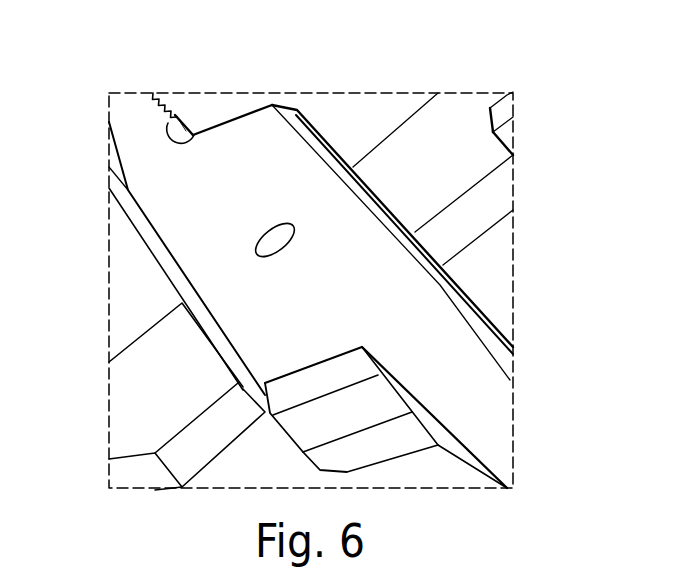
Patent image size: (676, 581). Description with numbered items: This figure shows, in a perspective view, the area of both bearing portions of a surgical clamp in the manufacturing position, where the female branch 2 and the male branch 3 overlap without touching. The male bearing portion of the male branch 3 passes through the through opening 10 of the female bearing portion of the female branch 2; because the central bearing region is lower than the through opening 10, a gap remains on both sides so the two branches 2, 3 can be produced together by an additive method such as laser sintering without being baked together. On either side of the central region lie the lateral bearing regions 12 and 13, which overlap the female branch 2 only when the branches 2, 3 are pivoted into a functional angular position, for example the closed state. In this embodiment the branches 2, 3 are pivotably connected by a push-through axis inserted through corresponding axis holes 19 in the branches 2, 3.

The female branch 2 is at (487, 384).
The male branch 3 is at (470, 94).
The through opening 10 is at (362, 406).
The lateral bearing region 12 is at (162, 363).
The lateral bearing region 13 is at (457, 150).
The axis hole 19 is at (278, 235).